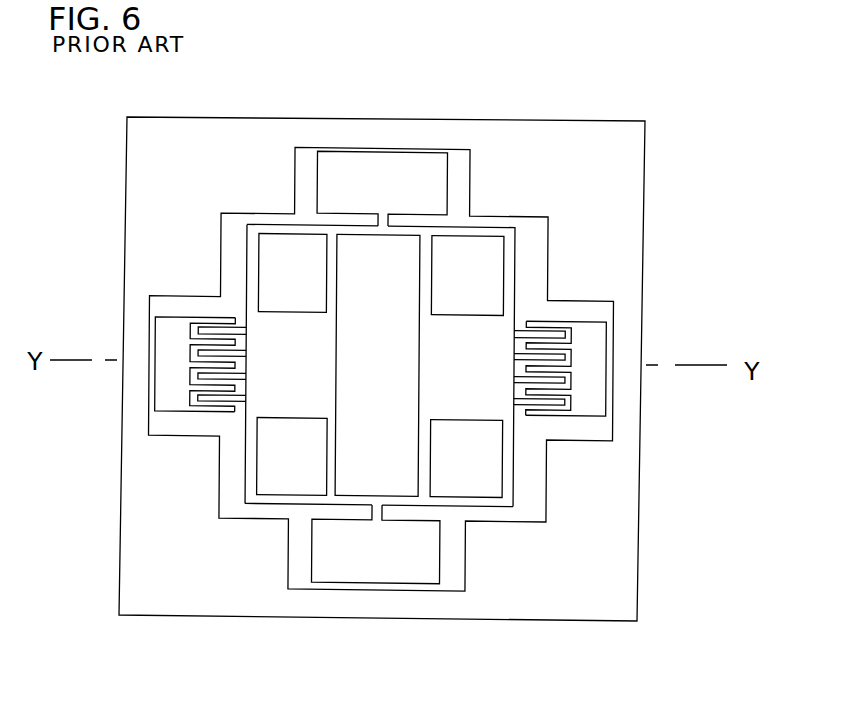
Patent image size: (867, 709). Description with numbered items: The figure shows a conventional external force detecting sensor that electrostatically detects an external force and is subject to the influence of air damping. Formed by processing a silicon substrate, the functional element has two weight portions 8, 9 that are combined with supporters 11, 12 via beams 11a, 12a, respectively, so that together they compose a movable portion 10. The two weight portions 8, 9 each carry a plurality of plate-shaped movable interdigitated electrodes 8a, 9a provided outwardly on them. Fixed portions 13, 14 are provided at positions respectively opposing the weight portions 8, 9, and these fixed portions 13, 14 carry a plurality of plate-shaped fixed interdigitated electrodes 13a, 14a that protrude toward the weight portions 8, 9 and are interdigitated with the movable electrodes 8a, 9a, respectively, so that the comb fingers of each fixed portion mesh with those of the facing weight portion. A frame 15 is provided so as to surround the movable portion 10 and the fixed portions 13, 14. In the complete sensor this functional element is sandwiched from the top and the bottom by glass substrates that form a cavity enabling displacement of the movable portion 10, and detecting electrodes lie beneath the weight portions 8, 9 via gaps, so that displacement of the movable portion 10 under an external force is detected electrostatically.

The weight portion 8 is at (315, 340).
The movable interdigitated electrodes 8a is at (243, 408).
The weight portion 9 is at (430, 382).
The movable interdigitated electrodes 9a is at (512, 407).
The movable portion 10 is at (545, 284).
The supporter 11 is at (376, 178).
The beam 11a is at (277, 223).
The supporter 12 is at (369, 570).
The beam 12a is at (487, 503).
The fixed portion 13 is at (163, 343).
The fixed interdigitated electrodes 13a is at (218, 318).
The fixed portion 14 is at (597, 380).
The fixed interdigitated electrodes 14a is at (550, 323).
The frame 15 is at (583, 155).